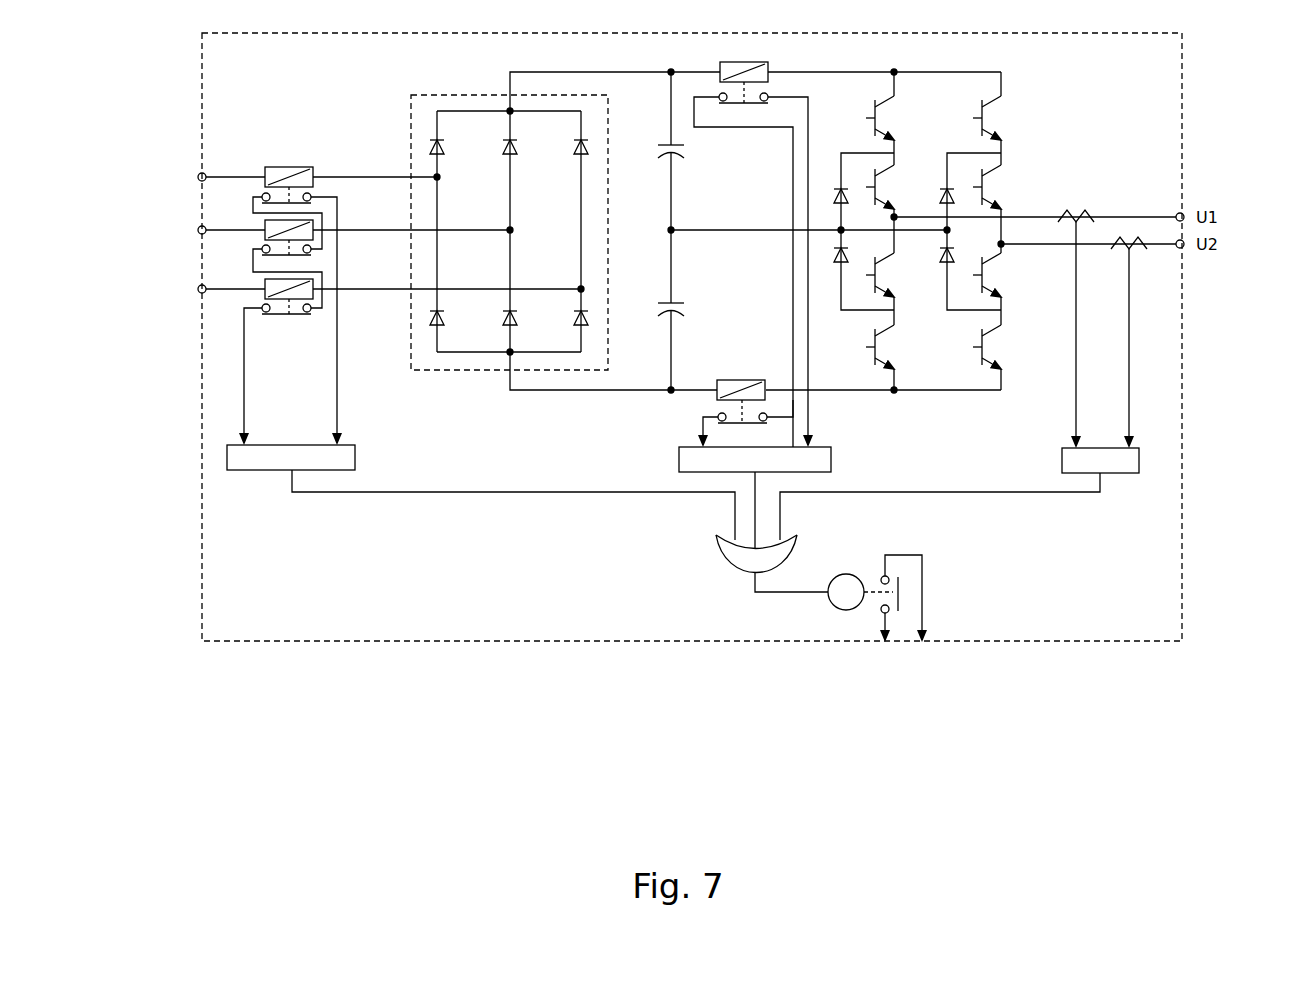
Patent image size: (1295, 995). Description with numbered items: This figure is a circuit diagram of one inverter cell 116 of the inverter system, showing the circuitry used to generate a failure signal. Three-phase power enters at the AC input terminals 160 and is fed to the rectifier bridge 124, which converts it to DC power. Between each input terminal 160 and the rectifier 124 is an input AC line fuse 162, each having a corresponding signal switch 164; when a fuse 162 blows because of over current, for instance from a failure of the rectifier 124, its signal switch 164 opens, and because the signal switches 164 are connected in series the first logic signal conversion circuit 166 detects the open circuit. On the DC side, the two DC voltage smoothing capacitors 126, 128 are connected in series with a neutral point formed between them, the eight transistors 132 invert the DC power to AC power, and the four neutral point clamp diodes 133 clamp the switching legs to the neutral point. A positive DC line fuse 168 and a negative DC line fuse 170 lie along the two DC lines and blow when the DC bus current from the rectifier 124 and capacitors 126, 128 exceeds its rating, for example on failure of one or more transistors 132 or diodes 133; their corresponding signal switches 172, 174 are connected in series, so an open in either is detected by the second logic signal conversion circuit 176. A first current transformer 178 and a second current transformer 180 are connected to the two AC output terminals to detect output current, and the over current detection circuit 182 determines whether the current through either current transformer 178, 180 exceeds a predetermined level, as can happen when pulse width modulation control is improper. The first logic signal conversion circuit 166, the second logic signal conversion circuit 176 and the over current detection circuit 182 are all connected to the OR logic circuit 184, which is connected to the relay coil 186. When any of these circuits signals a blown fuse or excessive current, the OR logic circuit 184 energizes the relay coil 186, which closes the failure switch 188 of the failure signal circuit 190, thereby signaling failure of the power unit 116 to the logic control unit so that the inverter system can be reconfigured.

The inverter cell 116 is at (1195, 92).
The rectifier bridge 124 is at (458, 93).
The DC voltage smoothing capacitor C1A 126 is at (665, 143).
The DC voltage smoothing capacitor C1B 128 is at (655, 338).
The transistors 132 is at (907, 186).
The neutral point clamp diodes 133 is at (940, 197).
The AC input terminals 160 is at (133, 230).
The input AC line fuse 162 is at (270, 228).
The signal switch 164 is at (273, 262).
The logic signal conversion circuit OC1 166 is at (258, 455).
The DC line fuse FP 168 is at (721, 62).
The DC line fuse FN 170 is at (718, 392).
The signal switch 172 is at (769, 92).
The signal switch 174 is at (708, 424).
The logic signal conversion circuit OC2 176 is at (683, 452).
The current transformer CT1 178 is at (1087, 192).
The current transformer CT2 180 is at (1135, 256).
The over current detection circuit OC3 182 is at (1122, 466).
The OR logic circuit 184 is at (728, 550).
The relay coil FL-U 186 is at (838, 606).
The failure switch 188 is at (893, 623).
The failure signal circuit 190 is at (926, 625).